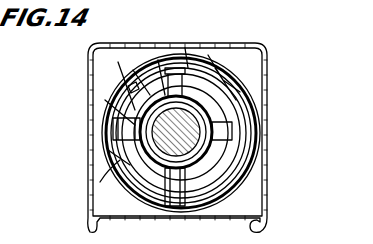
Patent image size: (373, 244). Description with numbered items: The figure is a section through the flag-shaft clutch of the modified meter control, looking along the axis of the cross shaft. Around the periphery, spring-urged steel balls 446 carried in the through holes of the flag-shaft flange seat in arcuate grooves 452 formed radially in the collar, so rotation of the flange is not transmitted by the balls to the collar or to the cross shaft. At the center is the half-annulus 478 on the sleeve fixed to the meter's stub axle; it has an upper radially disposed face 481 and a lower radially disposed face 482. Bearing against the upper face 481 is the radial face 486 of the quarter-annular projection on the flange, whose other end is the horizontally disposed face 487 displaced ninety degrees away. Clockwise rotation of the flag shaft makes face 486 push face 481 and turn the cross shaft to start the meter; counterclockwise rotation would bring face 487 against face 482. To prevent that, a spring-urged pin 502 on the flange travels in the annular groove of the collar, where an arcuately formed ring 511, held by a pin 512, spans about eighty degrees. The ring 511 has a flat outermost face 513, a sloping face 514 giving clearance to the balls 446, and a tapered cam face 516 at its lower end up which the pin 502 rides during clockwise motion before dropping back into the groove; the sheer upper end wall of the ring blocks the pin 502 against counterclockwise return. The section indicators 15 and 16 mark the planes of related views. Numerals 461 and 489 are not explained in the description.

The section line 15- 15 is at (98, 60).
The section line 16- 16 is at (60, 108).
The ball 446 is at (215, 48).
The arcuate groove 452 is at (190, 58).
The ring 461 is at (250, 78).
The half-annulus 478 is at (246, 116).
The upper face 481 is at (252, 95).
The lower face 482 is at (237, 155).
The radial face 486 is at (182, 68).
The radial face 487 is at (143, 162).
The hub ring 489 is at (172, 96).
The pin 502 is at (160, 100).
The arcuately formed ring 511 is at (118, 120).
The pin 512 is at (122, 125).
The flat outermost face 513 is at (128, 101).
The sloping face 514 is at (127, 80).
The cam face 516 is at (124, 163).